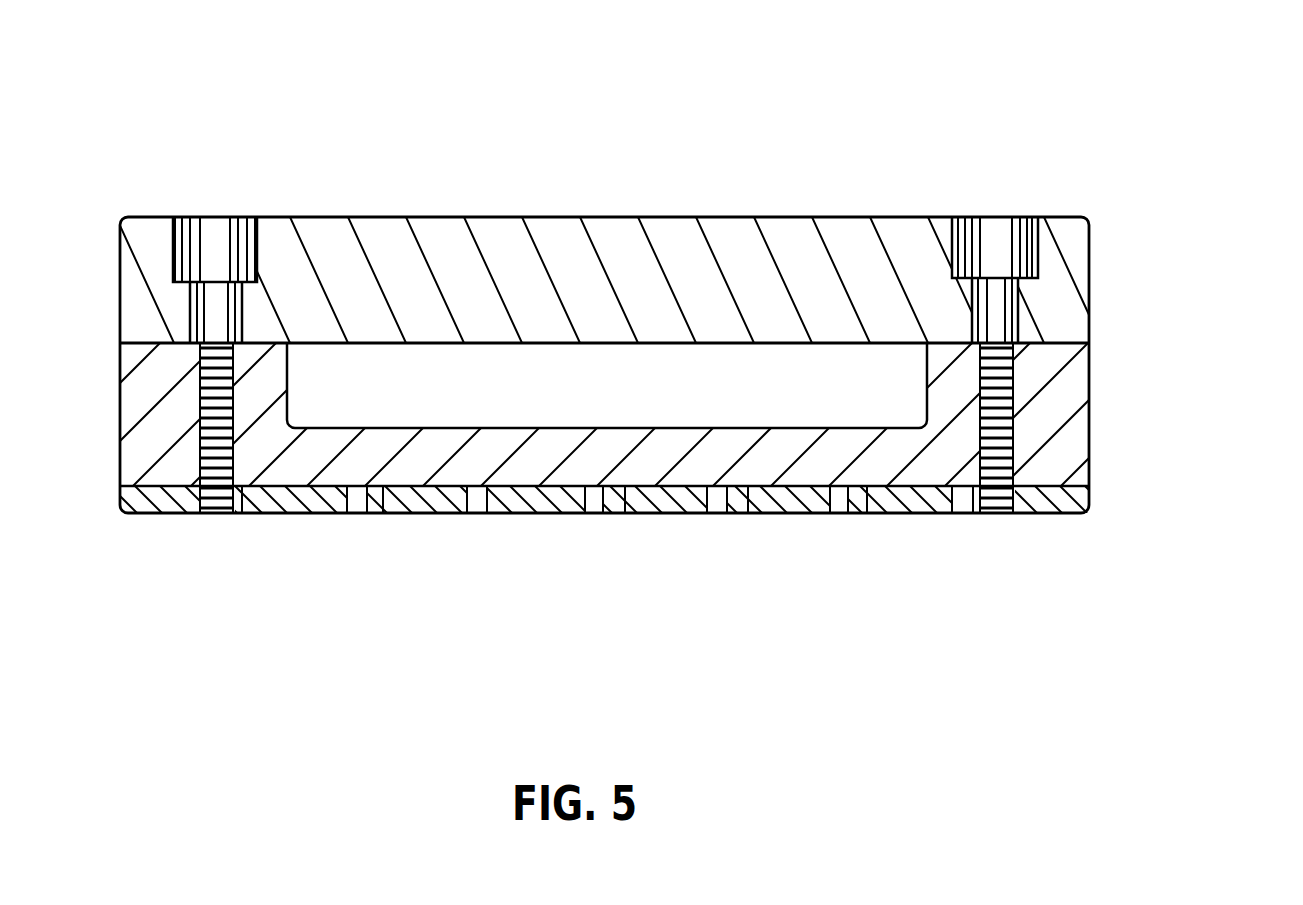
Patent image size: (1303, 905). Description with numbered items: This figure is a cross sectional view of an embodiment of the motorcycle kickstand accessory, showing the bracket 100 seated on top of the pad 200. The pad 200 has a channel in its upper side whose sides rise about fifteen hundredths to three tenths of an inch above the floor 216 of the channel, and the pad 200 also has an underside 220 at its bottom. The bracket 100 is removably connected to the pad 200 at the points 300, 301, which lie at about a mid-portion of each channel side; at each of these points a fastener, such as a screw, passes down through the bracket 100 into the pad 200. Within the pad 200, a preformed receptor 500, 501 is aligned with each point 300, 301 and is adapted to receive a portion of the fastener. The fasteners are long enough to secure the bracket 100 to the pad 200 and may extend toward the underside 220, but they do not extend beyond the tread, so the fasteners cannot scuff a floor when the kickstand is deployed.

The bracket 100 is at (1106, 257).
The pad 200 is at (1106, 408).
The floor 216 is at (801, 443).
The underside 220 is at (1086, 492).
The point 300 is at (1017, 227).
The point 301 is at (222, 213).
The preformed receptor 500 is at (1014, 496).
The preformed receptor 501 is at (235, 480).